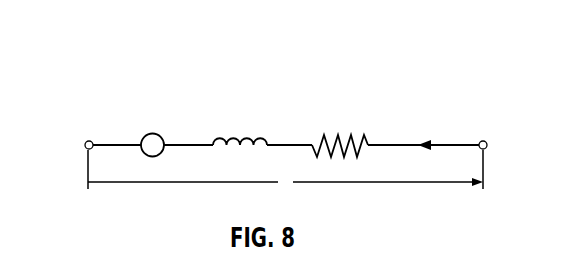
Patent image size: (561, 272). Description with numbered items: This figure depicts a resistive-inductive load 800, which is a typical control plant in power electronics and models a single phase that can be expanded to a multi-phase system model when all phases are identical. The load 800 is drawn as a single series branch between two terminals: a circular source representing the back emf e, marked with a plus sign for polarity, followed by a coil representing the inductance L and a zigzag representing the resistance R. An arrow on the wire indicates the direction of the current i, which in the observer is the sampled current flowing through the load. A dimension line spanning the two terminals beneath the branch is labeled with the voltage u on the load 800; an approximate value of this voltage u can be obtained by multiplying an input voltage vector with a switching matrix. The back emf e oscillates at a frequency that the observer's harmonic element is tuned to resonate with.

The resistive-inductive (RL) load 800 is at (107, 78).
The back emf e is at (152, 128).
The inductance L is at (240, 122).
The resistance R is at (340, 128).
The current i is at (425, 125).
The voltage on the load u is at (285, 171).